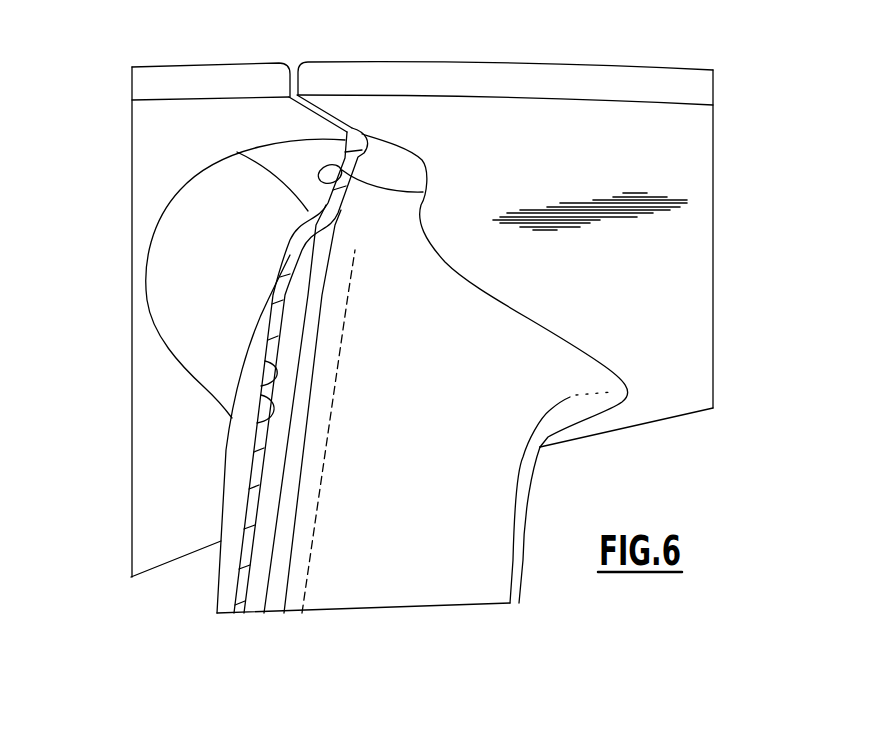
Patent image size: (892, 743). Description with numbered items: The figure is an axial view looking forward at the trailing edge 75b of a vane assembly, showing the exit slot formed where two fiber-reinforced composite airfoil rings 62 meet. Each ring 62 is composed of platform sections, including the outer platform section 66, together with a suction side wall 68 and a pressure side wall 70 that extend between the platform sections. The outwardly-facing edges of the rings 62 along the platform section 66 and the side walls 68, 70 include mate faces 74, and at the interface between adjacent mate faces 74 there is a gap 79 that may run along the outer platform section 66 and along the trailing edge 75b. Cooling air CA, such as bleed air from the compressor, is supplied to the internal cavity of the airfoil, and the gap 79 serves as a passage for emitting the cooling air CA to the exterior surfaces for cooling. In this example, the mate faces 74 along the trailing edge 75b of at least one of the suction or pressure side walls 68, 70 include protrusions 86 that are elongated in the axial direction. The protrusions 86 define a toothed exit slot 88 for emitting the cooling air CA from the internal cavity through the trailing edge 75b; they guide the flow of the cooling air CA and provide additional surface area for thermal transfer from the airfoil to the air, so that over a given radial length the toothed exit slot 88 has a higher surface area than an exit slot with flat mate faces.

The fiber-reinforced composite airfoil ring 62 is at (173, 148).
The outer platform section 66 is at (208, 78).
The gap 79 is at (333, 117).
The mate face 74 is at (341, 128).
The pressure side wall 70 is at (230, 443).
The protrusion 86 is at (268, 390).
The toothed exit slot 88 is at (256, 483).
The trailing edge 75b is at (212, 565).
The suction side wall 68 is at (497, 502).
The cooling air CA is at (277, 293).